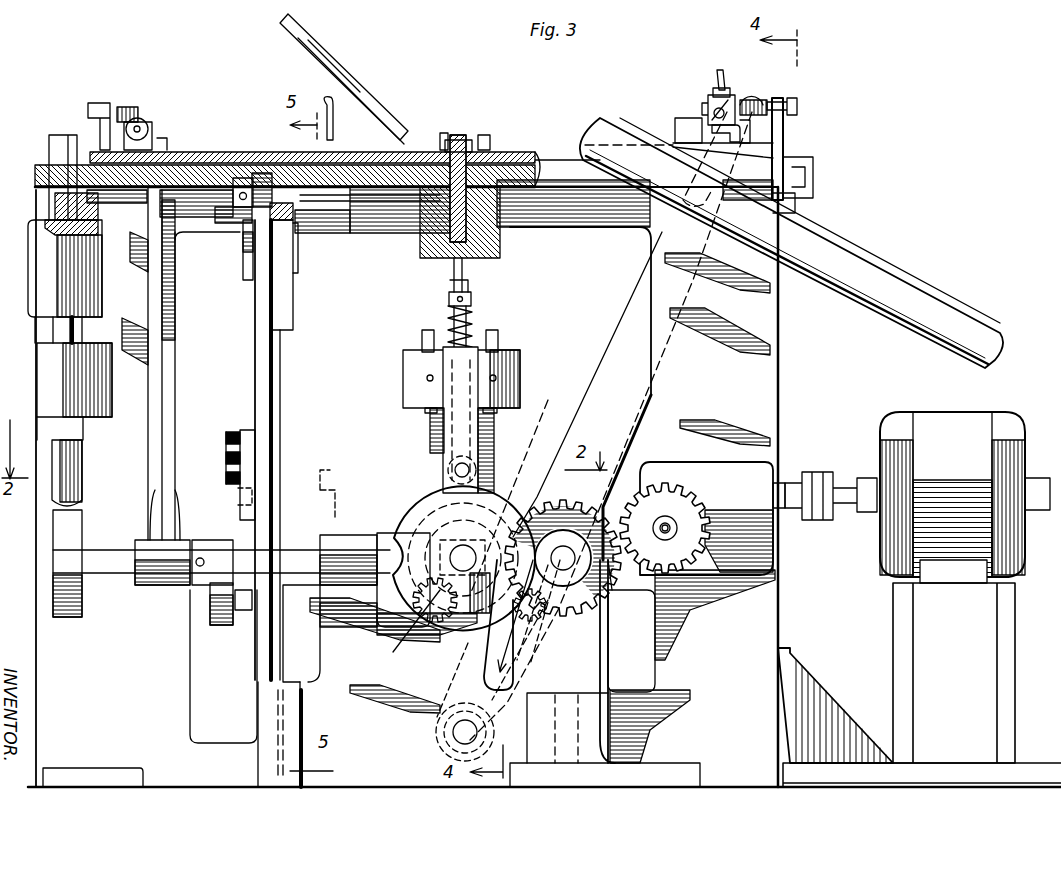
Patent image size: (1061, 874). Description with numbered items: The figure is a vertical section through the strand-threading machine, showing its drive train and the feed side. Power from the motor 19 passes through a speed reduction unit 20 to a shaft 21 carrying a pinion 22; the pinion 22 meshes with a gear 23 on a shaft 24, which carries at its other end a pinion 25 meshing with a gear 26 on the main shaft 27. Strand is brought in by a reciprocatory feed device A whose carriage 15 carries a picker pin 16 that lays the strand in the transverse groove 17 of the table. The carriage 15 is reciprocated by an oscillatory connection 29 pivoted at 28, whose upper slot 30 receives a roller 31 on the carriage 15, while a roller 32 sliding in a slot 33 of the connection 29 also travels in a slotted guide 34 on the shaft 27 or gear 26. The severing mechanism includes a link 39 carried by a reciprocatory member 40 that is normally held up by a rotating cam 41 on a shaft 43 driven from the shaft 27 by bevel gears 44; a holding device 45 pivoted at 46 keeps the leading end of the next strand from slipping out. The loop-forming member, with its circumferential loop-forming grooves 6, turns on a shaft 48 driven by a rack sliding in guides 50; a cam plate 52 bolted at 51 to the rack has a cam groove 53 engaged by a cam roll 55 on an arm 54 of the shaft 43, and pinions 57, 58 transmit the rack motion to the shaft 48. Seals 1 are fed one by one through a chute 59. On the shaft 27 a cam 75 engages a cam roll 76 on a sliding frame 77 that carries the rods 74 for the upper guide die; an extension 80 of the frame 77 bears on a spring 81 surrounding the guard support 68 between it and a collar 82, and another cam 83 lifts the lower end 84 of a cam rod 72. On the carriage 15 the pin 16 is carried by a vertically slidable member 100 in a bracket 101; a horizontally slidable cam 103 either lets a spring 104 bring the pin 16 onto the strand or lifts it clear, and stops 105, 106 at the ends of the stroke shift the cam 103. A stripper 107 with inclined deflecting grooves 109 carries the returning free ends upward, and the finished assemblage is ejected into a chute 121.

The sealing member 1 is at (472, 168).
The loop-forming grooves 6 is at (498, 146).
The carriage 15 is at (678, 118).
The picker pin 16 is at (557, 160).
The transverse groove 17 is at (241, 152).
The motor 19 is at (919, 599).
The speed reduction unit 20 is at (755, 525).
The shaft 21 is at (672, 524).
The pinion 22 is at (672, 508).
The gear 23 is at (627, 588).
The shaft 24 is at (546, 605).
The pinion 25 is at (580, 596).
The gear 26 is at (500, 512).
The shaft 27 is at (417, 580).
The pivot 28 is at (453, 732).
The oscillatory connection 29 is at (621, 326).
The slot 30 is at (680, 180).
The roller 31 is at (735, 210).
The roller 32 is at (531, 640).
The slot 33 is at (527, 678).
The slotted guide 34 is at (540, 620).
The link 39 is at (98, 213).
The reciprocatory member 40 is at (28, 225).
The cam 41 is at (82, 603).
The shaft 43 is at (117, 550).
The bevel gears 44 is at (415, 627).
The holding device 45 is at (152, 134).
The pivot 46 is at (143, 118).
The shaft 48 is at (372, 203).
The guides 50 is at (268, 373).
The bolts 51 is at (226, 458).
The cam plate 52 is at (250, 456).
The cam groove 53 is at (238, 500).
The arm 54 is at (218, 625).
The cam roll 55 is at (245, 612).
The pinion 57 is at (246, 228).
The pinion 58 is at (262, 173).
The chute 59 is at (388, 120).
The guard support 68 is at (450, 284).
The cam rod 72 is at (478, 428).
The rods 74 is at (422, 335).
The cam 75 is at (408, 498).
The cam roll 76 is at (480, 445).
The sliding frame 77 is at (403, 380).
The extension 80 is at (478, 340).
The spring 81 is at (476, 312).
The collar 82 is at (471, 298).
The cam 83 is at (432, 502).
The lower end of cam rod 84 is at (503, 500).
The slidable member 100 is at (727, 97).
The bracket 101 is at (722, 110).
The slidable cam 103 is at (752, 96).
The spring 104 is at (717, 74).
The stop 105 is at (127, 108).
The stop 106 is at (790, 98).
The stripper 107 is at (452, 133).
The deflecting grooves 109 is at (462, 150).
The chute 121 is at (866, 265).
The feed device A is at (810, 140).